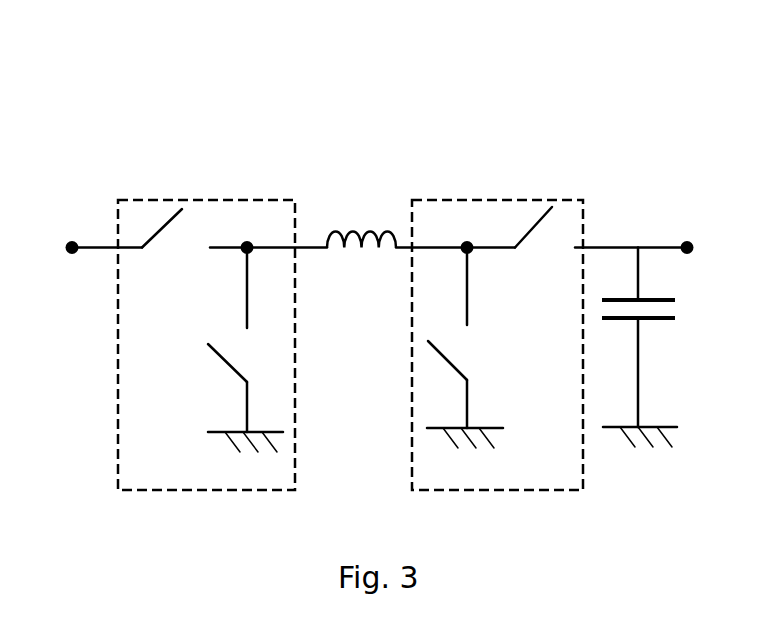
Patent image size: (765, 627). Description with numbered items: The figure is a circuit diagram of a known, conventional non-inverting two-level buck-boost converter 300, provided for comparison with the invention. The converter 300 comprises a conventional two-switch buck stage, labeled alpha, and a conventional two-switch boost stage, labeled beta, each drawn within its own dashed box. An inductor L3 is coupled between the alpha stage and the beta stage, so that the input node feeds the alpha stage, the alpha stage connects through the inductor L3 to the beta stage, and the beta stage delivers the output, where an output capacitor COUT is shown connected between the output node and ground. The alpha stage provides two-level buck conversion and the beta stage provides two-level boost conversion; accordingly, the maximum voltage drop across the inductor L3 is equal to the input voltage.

The buck-boost converter 300 is at (552, 142).
The inductor L3 is at (361, 223).
The output capacitor COUT is at (660, 325).